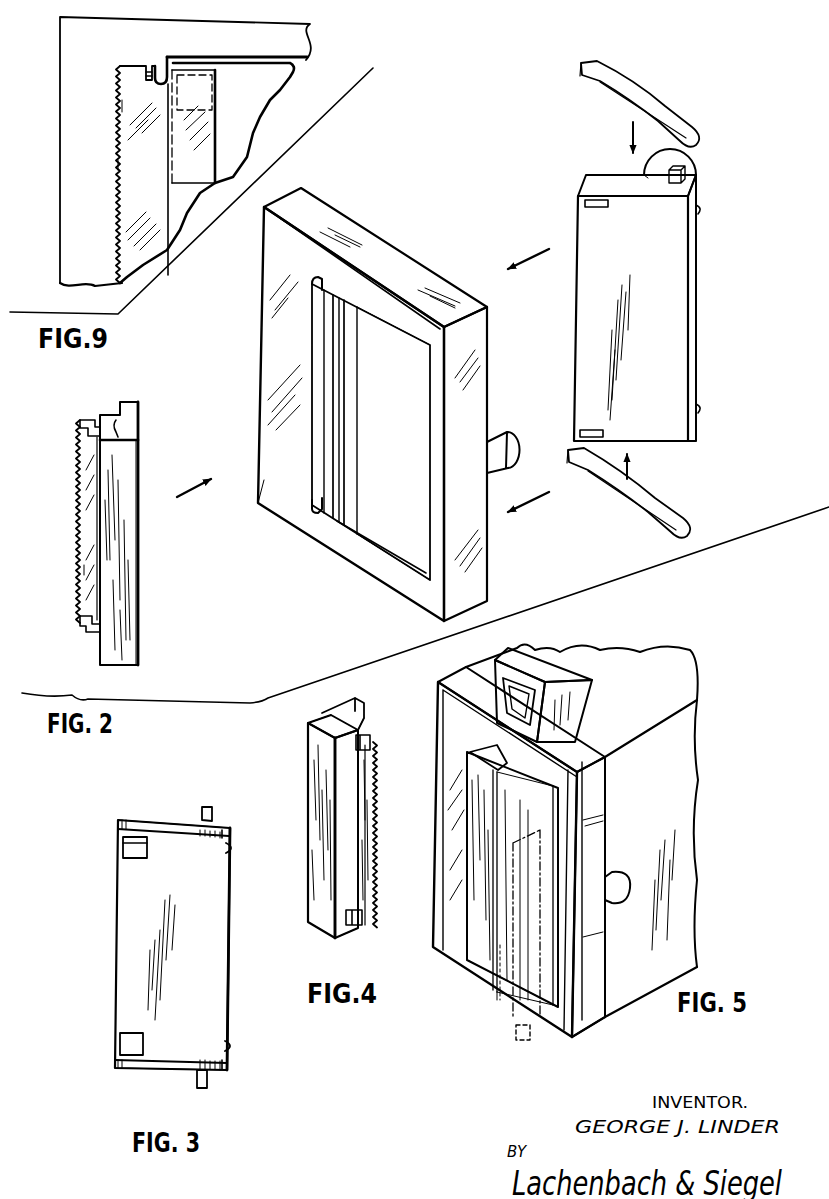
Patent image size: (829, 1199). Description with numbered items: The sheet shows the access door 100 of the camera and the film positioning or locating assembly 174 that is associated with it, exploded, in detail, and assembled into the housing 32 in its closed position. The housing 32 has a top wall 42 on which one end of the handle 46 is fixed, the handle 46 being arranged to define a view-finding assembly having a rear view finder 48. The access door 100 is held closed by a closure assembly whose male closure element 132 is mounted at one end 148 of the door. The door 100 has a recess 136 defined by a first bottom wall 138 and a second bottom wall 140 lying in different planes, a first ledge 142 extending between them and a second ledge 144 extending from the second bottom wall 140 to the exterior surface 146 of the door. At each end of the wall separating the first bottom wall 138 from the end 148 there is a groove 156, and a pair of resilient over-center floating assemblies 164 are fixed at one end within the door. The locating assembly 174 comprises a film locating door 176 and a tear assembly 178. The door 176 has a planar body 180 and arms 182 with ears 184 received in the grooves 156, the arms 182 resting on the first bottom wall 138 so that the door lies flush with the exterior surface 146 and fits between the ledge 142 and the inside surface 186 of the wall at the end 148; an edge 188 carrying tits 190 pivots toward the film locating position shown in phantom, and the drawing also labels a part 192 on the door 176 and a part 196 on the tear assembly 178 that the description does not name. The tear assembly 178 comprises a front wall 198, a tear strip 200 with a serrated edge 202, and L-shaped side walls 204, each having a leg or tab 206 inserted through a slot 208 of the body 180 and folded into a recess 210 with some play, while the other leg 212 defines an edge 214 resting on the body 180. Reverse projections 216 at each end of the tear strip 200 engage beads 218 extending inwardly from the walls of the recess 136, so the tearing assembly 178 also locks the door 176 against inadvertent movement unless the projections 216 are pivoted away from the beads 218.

In FIG. 5, the housing 32 is at (690, 977).
In FIG. 5, the top wall 42 is at (677, 698).
In FIG. 5, the handle 46 is at (556, 667).
In FIG. 5, the rear view finder 48 is at (527, 688).
In FIG. 2, the access door 100 is at (252, 378).
In FIG. 5, the access door 100 is at (433, 702).
In FIG. 2, the male closure element 132 is at (507, 466).
In FIG. 5, the male closure element 132 is at (620, 866).
In FIG. 9, the recess 136 is at (308, 64).
In FIG. 2, the recess 136 is at (371, 553).
In FIG. 2, the first bottom wall 138 is at (398, 466).
In FIG. 2, the second bottom wall 140 is at (335, 489).
In FIG. 2, the first ledge 142 is at (354, 348).
In FIG. 9, the second ledge 144 is at (119, 207).
In FIG. 2, the second ledge 144 is at (318, 382).
In FIG. 2, the exterior surface 146 is at (274, 506).
In FIG. 2, the end 148 is at (482, 578).
In FIG. 5, the end 148 is at (595, 992).
In FIG. 2, the groove 156 is at (412, 520).
In FIG. 2, the resilient over-center floating assembly 164 is at (620, 106).
In FIG. 9, the film positioning or locating assembly 174 is at (258, 103).
In FIG. 5, the film positioning or locating assembly 174 is at (502, 982).
In FIG. 2, the film positioning or locating door 176 is at (669, 346).
In FIG. 2, the tear assembly 178 is at (130, 598).
In FIG. 4, the tear assembly 178 is at (321, 902).
In FIG. 5, the tear assembly 178 is at (479, 934).
In FIG. 2, the planar body 180 is at (650, 269).
In FIG. 5, the planar body 180 is at (535, 794).
In FIG. 3, the planar body 180 is at (172, 945).
In FIG. 2, the arm 182 is at (592, 181).
In FIG. 5, the arm 182 is at (513, 843).
In FIG. 3, the arm 182 is at (143, 826).
In FIG. 2, the ear 184 is at (690, 174).
In FIG. 3, the ear 184 is at (226, 822).
In FIG. 2, the inside surface 186 is at (435, 380).
In FIG. 2, the edge 188 is at (697, 270).
In FIG. 2, the tit 190 is at (700, 212).
In FIG. 3, the tit 190 is at (235, 848).
In FIG. 2, the pin 192 is at (648, 175).
In FIG. 3, the pin 192 is at (203, 808).
In FIG. 9, the edge 196 is at (202, 140).
In FIG. 2, the edge 196 is at (136, 505).
In FIG. 4, the edge 196 is at (323, 933).
In FIG. 5, the edge 196 is at (480, 963).
In FIG. 4, the front wall 198 is at (352, 932).
In FIG. 9, the tear strip 200 is at (138, 107).
In FIG. 2, the tear strip 200 is at (82, 530).
In FIG. 4, the tear strip 200 is at (366, 747).
In FIG. 9, the serrated edge 202 is at (122, 165).
In FIG. 2, the serrated edge 202 is at (80, 568).
In FIG. 4, the serrated edge 202 is at (376, 813).
In FIG. 2, the side wall 204 is at (144, 438).
In FIG. 4, the side wall 204 is at (314, 712).
In FIG. 5, the side wall 204 is at (500, 947).
In FIG. 2, the leg or tab 206 is at (134, 423).
In FIG. 4, the leg or tab 206 is at (352, 704).
In FIG. 2, the slot 208 is at (586, 207).
In FIG. 3, the slot 208 is at (148, 838).
In FIG. 3, the recess 210 is at (134, 858).
In FIG. 4, the leg 212 is at (313, 727).
In FIG. 5, the leg 212 is at (478, 747).
In FIG. 4, the edge 214 is at (360, 721).
In FIG. 9, the reverse projection 216 is at (151, 70).
In FIG. 2, the reverse projection 216 is at (82, 428).
In FIG. 4, the reverse projection 216 is at (367, 752).
In FIG. 5, the reverse projection 216 is at (522, 1033).
In FIG. 9, the bead 218 is at (165, 72).
In FIG. 2, the bead 218 is at (314, 282).